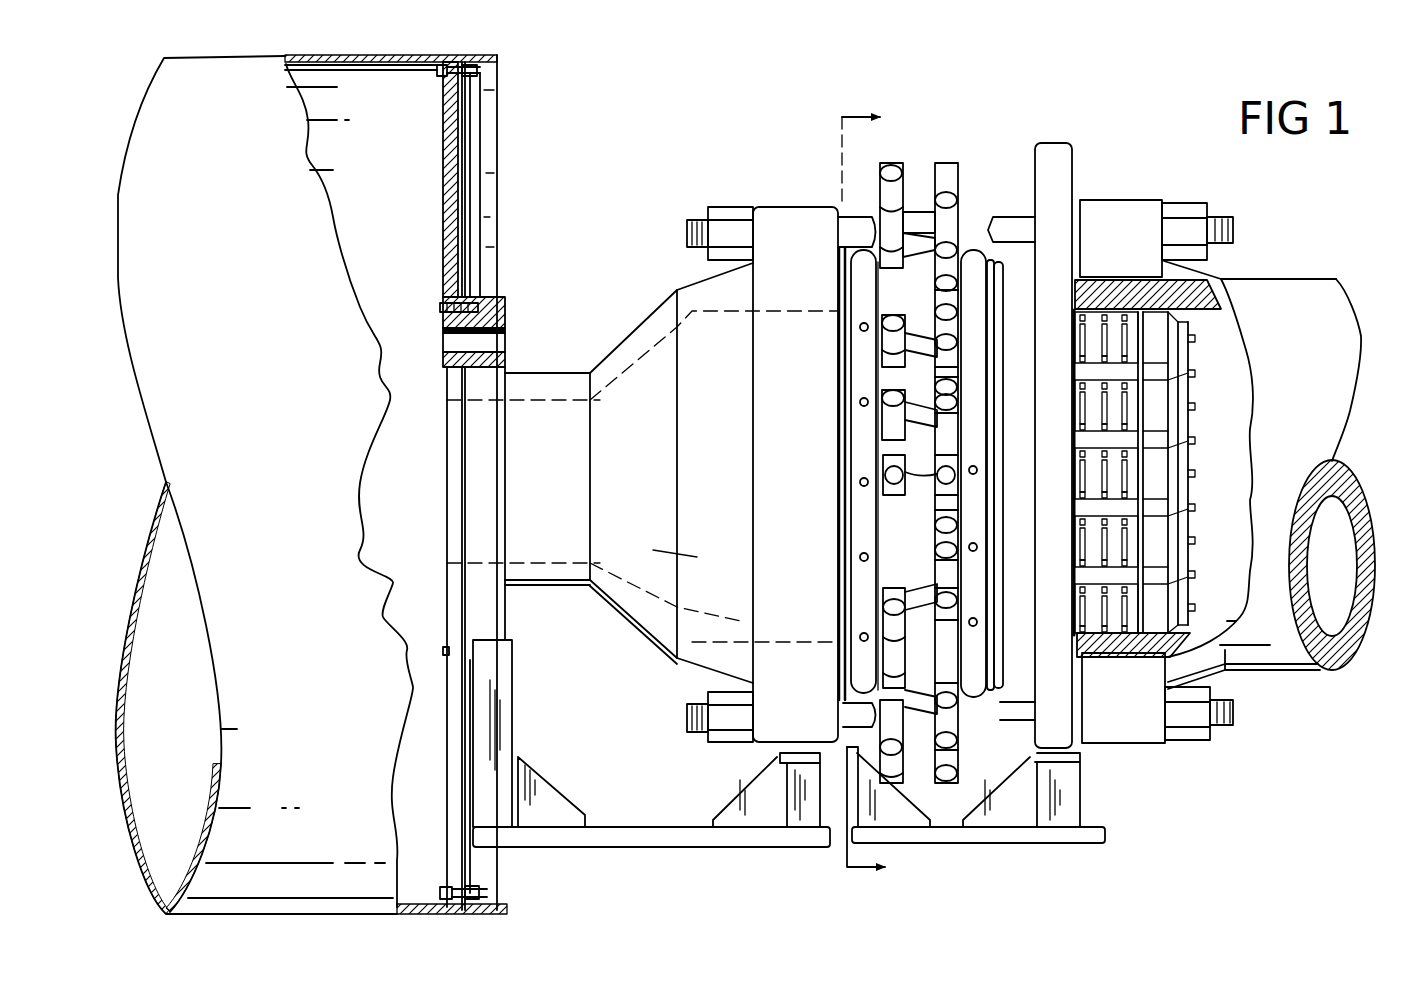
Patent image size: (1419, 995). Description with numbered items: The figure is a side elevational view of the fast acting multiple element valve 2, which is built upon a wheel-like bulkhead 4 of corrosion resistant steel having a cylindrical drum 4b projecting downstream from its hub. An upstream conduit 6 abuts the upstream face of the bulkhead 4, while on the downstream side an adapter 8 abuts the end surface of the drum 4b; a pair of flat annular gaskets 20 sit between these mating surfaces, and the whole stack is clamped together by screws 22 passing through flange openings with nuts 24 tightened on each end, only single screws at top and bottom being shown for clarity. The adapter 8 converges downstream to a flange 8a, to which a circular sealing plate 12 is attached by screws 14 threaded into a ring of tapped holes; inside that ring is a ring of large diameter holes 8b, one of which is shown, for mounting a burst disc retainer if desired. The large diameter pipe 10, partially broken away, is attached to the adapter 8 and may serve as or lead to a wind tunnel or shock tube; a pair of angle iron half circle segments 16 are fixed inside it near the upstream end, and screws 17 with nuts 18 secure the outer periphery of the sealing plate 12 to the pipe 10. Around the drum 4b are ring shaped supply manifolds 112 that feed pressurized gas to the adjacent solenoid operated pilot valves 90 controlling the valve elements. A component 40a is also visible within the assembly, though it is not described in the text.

The fast acting multiple element valve 2 is at (985, 95).
The bulkhead 4 is at (1026, 128).
The cylindrical drum 4b is at (890, 527).
The upstream conduit 6 is at (1333, 279).
The adapter 8 is at (648, 314).
The flange 8a is at (505, 318).
The holes 8b is at (447, 343).
The large diameter pipe 10 is at (221, 199).
The circular sealing plate 12 is at (443, 176).
The screws 14 is at (440, 306).
The angle iron half circle segments 16 is at (480, 68).
The screws 17 is at (437, 71).
The nuts 18 is at (470, 76).
The flat annular gaskets 20 is at (840, 678).
The screws 22 is at (690, 228).
The nuts 24 is at (718, 207).
The electrode stack 40a is at (1076, 443).
The pilot valves 90 is at (947, 163).
The ring shaped supply manifolds 112 is at (826, 378).